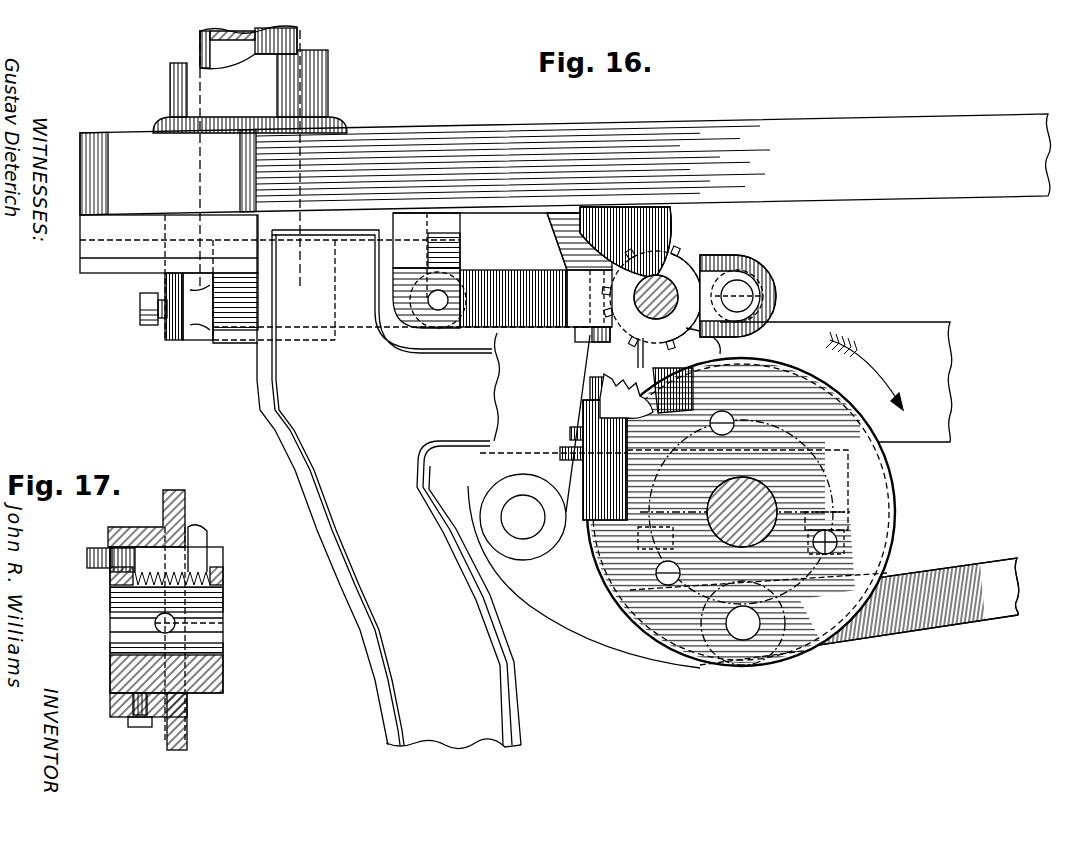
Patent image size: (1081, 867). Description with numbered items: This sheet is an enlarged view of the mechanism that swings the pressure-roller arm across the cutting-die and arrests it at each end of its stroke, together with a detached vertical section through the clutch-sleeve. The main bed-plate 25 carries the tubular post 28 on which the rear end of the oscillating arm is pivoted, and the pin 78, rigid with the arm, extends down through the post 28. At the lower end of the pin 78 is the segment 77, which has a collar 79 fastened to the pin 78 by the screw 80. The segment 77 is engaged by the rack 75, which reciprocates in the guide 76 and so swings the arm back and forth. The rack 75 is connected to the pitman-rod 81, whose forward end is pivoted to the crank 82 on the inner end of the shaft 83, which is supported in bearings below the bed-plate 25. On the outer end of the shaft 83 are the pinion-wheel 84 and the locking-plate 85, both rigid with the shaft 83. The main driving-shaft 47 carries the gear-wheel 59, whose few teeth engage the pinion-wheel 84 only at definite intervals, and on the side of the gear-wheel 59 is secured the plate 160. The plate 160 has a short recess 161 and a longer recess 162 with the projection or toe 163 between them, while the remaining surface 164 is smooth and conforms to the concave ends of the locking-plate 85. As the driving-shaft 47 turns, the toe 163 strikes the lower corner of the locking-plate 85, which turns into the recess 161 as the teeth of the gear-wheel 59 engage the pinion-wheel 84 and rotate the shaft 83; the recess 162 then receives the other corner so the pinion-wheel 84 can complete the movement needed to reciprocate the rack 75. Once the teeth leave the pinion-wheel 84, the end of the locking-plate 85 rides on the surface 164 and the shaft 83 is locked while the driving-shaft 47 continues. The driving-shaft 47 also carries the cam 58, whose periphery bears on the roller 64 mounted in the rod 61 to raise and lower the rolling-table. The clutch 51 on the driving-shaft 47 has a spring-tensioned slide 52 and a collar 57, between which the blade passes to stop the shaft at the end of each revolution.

In FIG. 16, the main bed-plate 25 is at (565, 155).
In FIG. 16, the post 28 is at (252, 91).
In FIG. 16, the pin 78 is at (198, 42).
In FIG. 16, the screw 80 is at (140, 310).
In FIG. 16, the collar 79 is at (172, 341).
In FIG. 16, the segment 77 is at (206, 341).
In FIG. 16, the rack 75 is at (248, 350).
In FIG. 16, the guide 76 is at (423, 222).
In FIG. 16, the pitman-rod 81 is at (548, 322).
In FIG. 16, the locking-plate 85 is at (675, 223).
In FIG. 16, the pinion-wheel 84 is at (618, 324).
In FIG. 16, the shaft 83 is at (718, 256).
In FIG. 16, the crank 82 is at (765, 280).
In FIG. 16, the rod 61 is at (869, 602).
In FIG. 16, the longer recess 162 is at (580, 527).
In FIG. 16, the surface 164 is at (886, 478).
In FIG. 16, the cam 58 is at (808, 448).
In FIG. 16, the main driving-shaft 47 is at (750, 488).
In FIG. 16, the short recess 161 is at (711, 416).
In FIG. 16, the plate 160 is at (844, 542).
In FIG. 16, the roller 64 is at (785, 612).
In FIG. 16, the gear-wheel 59 is at (577, 435).
In FIG. 16, the projection 163 is at (617, 408).
In FIG. 17, the clutch 51 is at (146, 518).
In FIG. 17, the slide 52 is at (207, 531).
In FIG. 17, the collar 57 is at (187, 725).